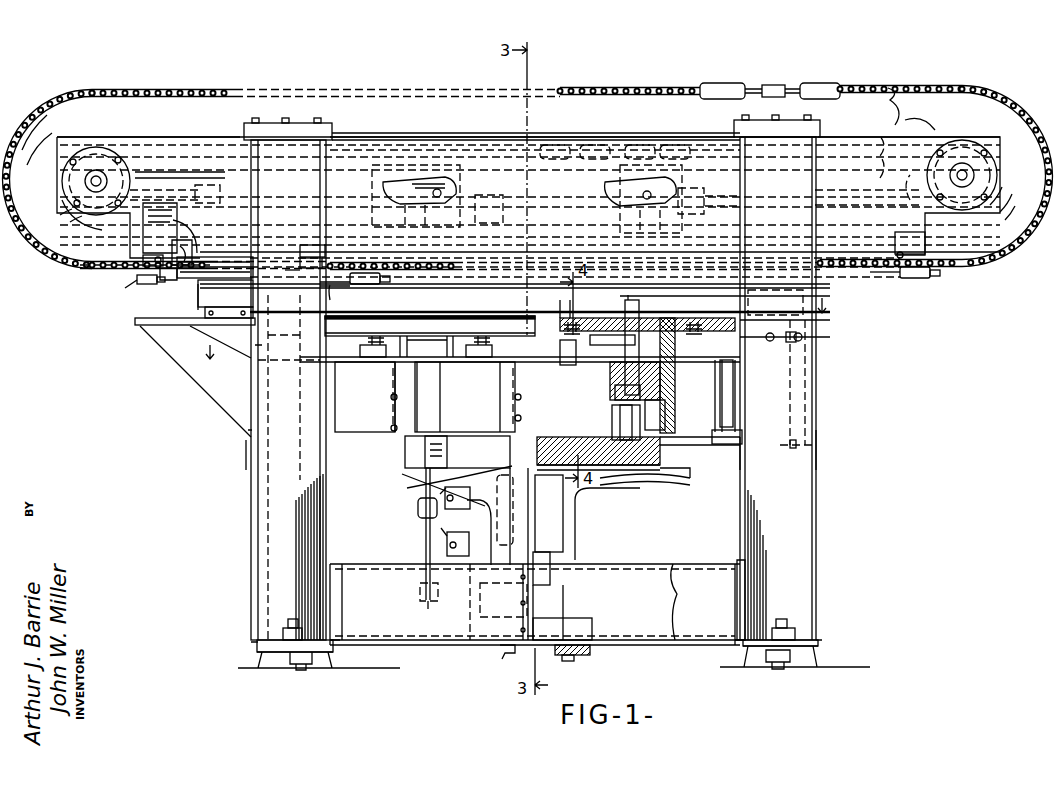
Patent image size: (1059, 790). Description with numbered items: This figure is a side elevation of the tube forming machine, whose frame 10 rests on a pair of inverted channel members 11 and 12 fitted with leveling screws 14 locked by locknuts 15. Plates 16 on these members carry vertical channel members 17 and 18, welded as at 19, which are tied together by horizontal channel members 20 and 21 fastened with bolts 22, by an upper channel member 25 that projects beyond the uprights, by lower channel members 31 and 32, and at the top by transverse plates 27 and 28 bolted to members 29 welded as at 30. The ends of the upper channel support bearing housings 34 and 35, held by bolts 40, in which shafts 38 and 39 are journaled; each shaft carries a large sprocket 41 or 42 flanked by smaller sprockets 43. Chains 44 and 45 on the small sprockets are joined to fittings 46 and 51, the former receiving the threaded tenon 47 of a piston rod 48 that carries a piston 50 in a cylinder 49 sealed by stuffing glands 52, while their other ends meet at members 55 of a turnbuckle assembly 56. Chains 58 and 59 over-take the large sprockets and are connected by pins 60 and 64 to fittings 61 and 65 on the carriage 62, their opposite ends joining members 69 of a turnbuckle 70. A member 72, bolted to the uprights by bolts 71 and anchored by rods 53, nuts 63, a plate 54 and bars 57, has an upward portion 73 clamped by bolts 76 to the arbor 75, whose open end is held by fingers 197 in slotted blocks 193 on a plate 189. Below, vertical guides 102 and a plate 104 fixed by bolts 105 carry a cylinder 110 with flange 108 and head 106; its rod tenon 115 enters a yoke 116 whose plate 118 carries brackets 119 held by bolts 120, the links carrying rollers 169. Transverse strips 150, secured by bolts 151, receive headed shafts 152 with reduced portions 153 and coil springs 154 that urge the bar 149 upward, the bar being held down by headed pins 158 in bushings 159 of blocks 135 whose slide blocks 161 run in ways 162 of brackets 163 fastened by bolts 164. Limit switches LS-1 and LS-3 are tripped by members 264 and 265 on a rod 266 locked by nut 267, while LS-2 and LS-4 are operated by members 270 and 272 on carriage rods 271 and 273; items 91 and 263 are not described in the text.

The frame 10 is at (828, 472).
The inverted channel member 11 is at (335, 658).
The inverted channel member 12 is at (818, 654).
The screws 14 is at (288, 623).
The locknuts 15 is at (283, 648).
The plates 16 is at (257, 637).
The vertical channel member 17 is at (260, 530).
The vertical channel member 18 is at (818, 535).
The weld 19 is at (255, 640).
The horizontal channel member 20 is at (685, 452).
The horizontal channel member 21 is at (730, 445).
The bolts 22 is at (340, 443).
The horizontal channel member 25 is at (424, 146).
The transverse plate 27 is at (296, 125).
The transverse plate 28 is at (788, 123).
The members 29 is at (338, 134).
The weld 30 is at (240, 136).
The lower horizontal channel member 31 is at (641, 572).
The lower horizontal channel member 32 is at (375, 575).
The bearing retaining housing 34 is at (82, 178).
The bearing retaining housing 35 is at (985, 205).
The shaft 38 is at (92, 205).
The shaft 39 is at (975, 168).
The bolts 40 is at (118, 160).
The sprocket 41 is at (56, 118).
The sprocket 42 is at (944, 96).
The sprockets 43 is at (185, 197).
The chain 44 is at (164, 180).
The chain 45 is at (846, 202).
The fitting 46 is at (200, 232).
The threaded tenon 47 is at (212, 190).
The piston rod 48 is at (302, 194).
The cylinder 49 is at (427, 178).
The piston 50 is at (465, 209).
The fitting 51 is at (706, 216).
The stuffing glands 52 is at (376, 220).
The rods 53 is at (800, 385).
The plate 54 is at (810, 438).
The members 55 is at (562, 148).
The turnbuckle assembly 56 is at (620, 134).
The bars 57 is at (738, 470).
The chain 58 is at (216, 94).
The chain 59 is at (888, 88).
The pin 60 is at (200, 282).
The fitting 61 is at (184, 252).
The carriage 62 is at (190, 304).
The nuts 63 is at (785, 335).
The pin 64 is at (306, 268).
The fitting 65 is at (325, 252).
The members 69 is at (726, 74).
The turnbuckle 70 is at (776, 79).
The bolts 71 is at (800, 337).
The member 72 is at (820, 322).
The upwardly extending portion 73 is at (740, 296).
The arbor 75 is at (646, 296).
The bolts 76 is at (775, 302).
The mounting plate 91 is at (230, 322).
The vertical guide 102 is at (514, 455).
The plate 104 is at (575, 651).
The bolts 105 is at (540, 662).
The head portion 106 is at (580, 493).
The flange 108 is at (580, 623).
The cylinder 110 is at (574, 565).
The tenon 115 is at (553, 426).
The yoke 116 is at (402, 484).
The plate portion 118 is at (645, 488).
The brackets 119 is at (636, 505).
The bolts 120 is at (670, 470).
The block 135 is at (616, 400).
The bar 149 is at (548, 332).
The transverse strip 150 is at (362, 342).
The bolts 151 is at (390, 380).
The headed shafts 152 is at (555, 360).
The reduced portions 153 is at (566, 317).
The coil springs 154 is at (400, 318).
The headed pins 158 is at (634, 324).
The guide bushings 159 is at (613, 381).
The block 161 is at (667, 420).
The ways 162 is at (612, 356).
The bracket 163 is at (674, 394).
The bolts 164 is at (388, 418).
The cam follower roller 169 is at (613, 420).
The plate 189 is at (277, 353).
The blocks 193 is at (295, 382).
The fingers 197 is at (260, 300).
The cam 263 is at (414, 515).
The member 264 is at (190, 325).
The member 265 is at (423, 593).
The rod 266 is at (431, 606).
The nut 267 is at (408, 475).
The member 270 is at (380, 283).
The rod 271 is at (346, 289).
The member 272 is at (137, 290).
The rod 273 is at (130, 281).
The limit switch LS-1 is at (442, 508).
The limit switch LS-2 is at (925, 247).
The limit switch LS-3 is at (442, 550).
The limit switch LS-4 is at (143, 258).